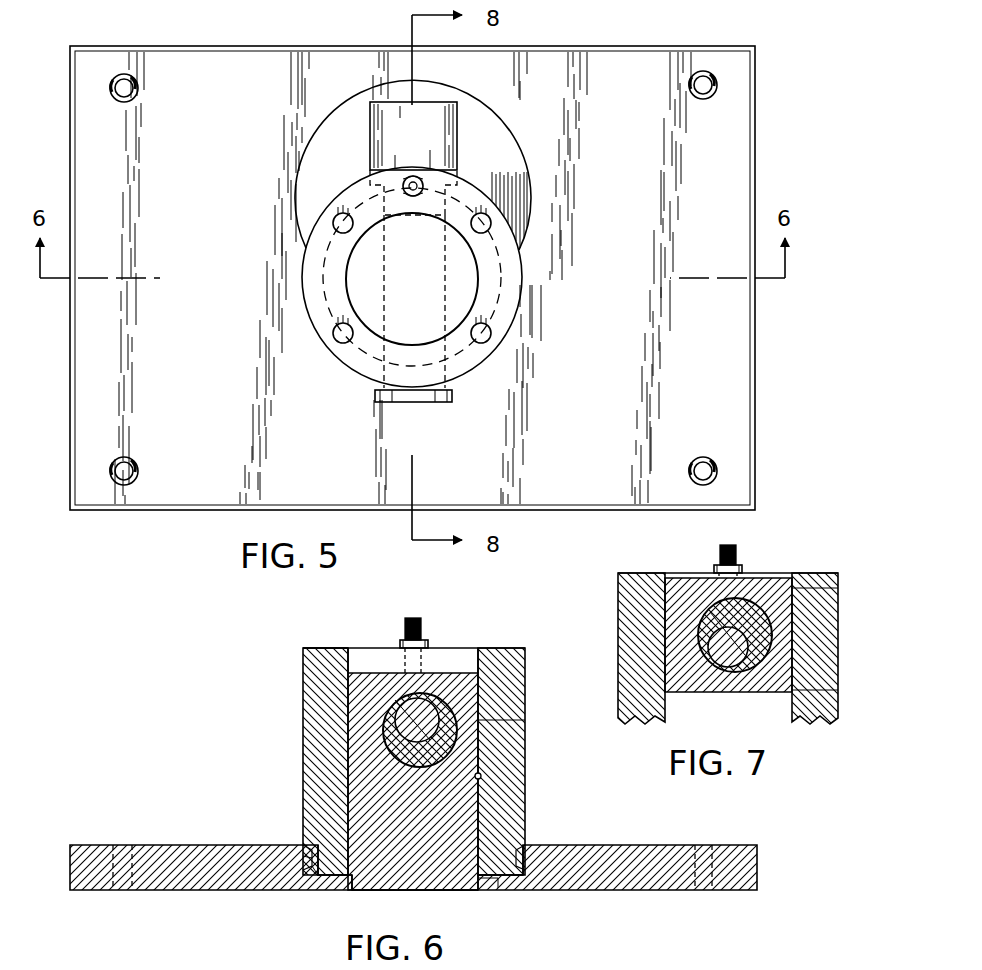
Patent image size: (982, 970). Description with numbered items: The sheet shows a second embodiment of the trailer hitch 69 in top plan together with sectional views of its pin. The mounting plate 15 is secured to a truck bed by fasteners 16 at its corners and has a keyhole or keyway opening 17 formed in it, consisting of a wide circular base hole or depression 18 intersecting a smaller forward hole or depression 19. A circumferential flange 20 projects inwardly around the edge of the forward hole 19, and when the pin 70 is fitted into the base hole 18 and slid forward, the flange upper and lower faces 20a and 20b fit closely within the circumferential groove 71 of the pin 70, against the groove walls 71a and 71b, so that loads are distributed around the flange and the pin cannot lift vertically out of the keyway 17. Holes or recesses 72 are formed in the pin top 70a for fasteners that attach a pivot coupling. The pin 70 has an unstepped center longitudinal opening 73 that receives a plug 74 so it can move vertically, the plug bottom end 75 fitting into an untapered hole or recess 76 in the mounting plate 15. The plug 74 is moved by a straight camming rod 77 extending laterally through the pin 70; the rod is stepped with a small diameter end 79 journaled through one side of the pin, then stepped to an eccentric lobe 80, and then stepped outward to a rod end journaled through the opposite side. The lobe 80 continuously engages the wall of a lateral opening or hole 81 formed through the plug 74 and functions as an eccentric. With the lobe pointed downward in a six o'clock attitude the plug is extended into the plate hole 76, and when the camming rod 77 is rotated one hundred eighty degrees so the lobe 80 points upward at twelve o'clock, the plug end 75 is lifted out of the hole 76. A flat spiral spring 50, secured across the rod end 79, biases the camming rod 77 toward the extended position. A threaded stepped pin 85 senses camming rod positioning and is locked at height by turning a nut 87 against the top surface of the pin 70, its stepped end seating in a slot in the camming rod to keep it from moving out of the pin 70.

In FIG. 5, the mounting plate 15 is at (203, 377).
In FIG. 6, the mounting plate 15 is at (174, 890).
In FIG. 5, the fasteners 16 is at (110, 88).
In FIG. 6, the fasteners 16 is at (120, 845).
In FIG. 5, the keyhole or keyway opening 17 is at (535, 155).
In FIG. 5, the base hole or depression 18 is at (490, 115).
In FIG. 5, the forward hole or depression 19 is at (478, 342).
In FIG. 6, the circumferential flange 20 is at (300, 858).
In FIG. 6, the flange upper face 20a is at (528, 870).
In FIG. 6, the flange lower face 20b is at (494, 890).
In FIG. 5, the flat spiral spring 50 is at (413, 402).
In FIG. 5, the trailer hitch 69 is at (330, 268).
In FIG. 7, the trailer hitch 69 is at (832, 556).
In FIG. 5, the pin 70 is at (495, 263).
In FIG. 6, the pin 70 is at (303, 772).
In FIG. 7, the pin 70 is at (635, 686).
In FIG. 6, the pin top 70a is at (302, 648).
In FIG. 5, the circumferential groove 71 is at (488, 328).
In FIG. 6, the circumferential groove 71 is at (304, 842).
In FIG. 6, the groove wall 71a is at (306, 856).
In FIG. 6, the groove wall 71b is at (315, 872).
In FIG. 6, the holes or recesses 72 is at (336, 646).
In FIG. 6, the center longitudinal opening 73 is at (482, 776).
In FIG. 7, the center longitudinal opening 73 is at (800, 690).
In FIG. 6, the plug 74 is at (525, 724).
In FIG. 7, the plug 74 is at (838, 588).
In FIG. 6, the plug bottom end 75 is at (450, 890).
In FIG. 6, the hole or recess 76 is at (360, 890).
In FIG. 5, the camming rod 77 is at (378, 130).
In FIG. 6, the camming rod 77 is at (348, 700).
In FIG. 7, the camming rod 77 is at (670, 582).
In FIG. 6, the camming rod small diameter end 79 is at (400, 722).
In FIG. 7, the camming rod small diameter end 79 is at (715, 640).
In FIG. 6, the eccentric lobe 80 is at (410, 732).
In FIG. 7, the eccentric lobe 80 is at (720, 640).
In FIG. 6, the lateral opening or hole 81 is at (430, 700).
In FIG. 7, the lateral opening or hole 81 is at (748, 618).
In FIG. 6, the threaded stepped pin 85 is at (405, 628).
In FIG. 7, the threaded stepped pin 85 is at (720, 555).
In FIG. 5, the nut 87 is at (413, 186).
In FIG. 6, the nut 87 is at (428, 644).
In FIG. 7, the nut 87 is at (742, 566).